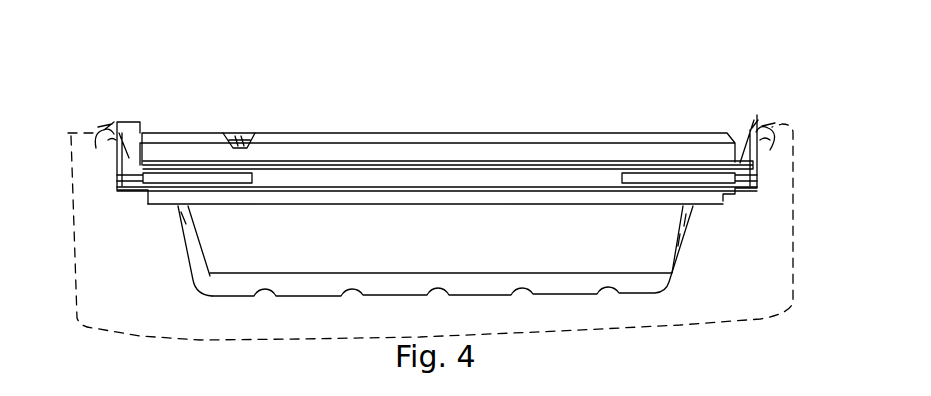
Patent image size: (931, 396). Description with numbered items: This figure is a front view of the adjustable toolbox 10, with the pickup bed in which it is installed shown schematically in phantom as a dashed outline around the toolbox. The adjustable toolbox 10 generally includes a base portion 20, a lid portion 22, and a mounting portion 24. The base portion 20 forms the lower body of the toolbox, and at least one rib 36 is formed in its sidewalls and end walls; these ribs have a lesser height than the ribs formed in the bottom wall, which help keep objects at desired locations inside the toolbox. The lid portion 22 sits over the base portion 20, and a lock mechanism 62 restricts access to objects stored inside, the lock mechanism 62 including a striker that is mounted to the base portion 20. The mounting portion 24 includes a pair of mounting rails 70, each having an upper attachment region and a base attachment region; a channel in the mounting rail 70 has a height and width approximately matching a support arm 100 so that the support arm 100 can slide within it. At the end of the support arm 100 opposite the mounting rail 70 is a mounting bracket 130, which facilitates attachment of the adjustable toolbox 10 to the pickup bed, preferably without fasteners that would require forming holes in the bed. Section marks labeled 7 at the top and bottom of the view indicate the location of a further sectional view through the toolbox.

The adjustable toolbox 10 is at (595, 73).
The base portion 20 is at (554, 286).
The lid portion 22 is at (439, 131).
The mounting portion 24 is at (503, 177).
The rib 36 is at (192, 238).
The lock mechanism 62 is at (227, 134).
The mounting rail 70 is at (352, 177).
The support arm 100 is at (132, 196).
The mounting bracket 130 is at (101, 158).
The section line 7 is at (253, 106).